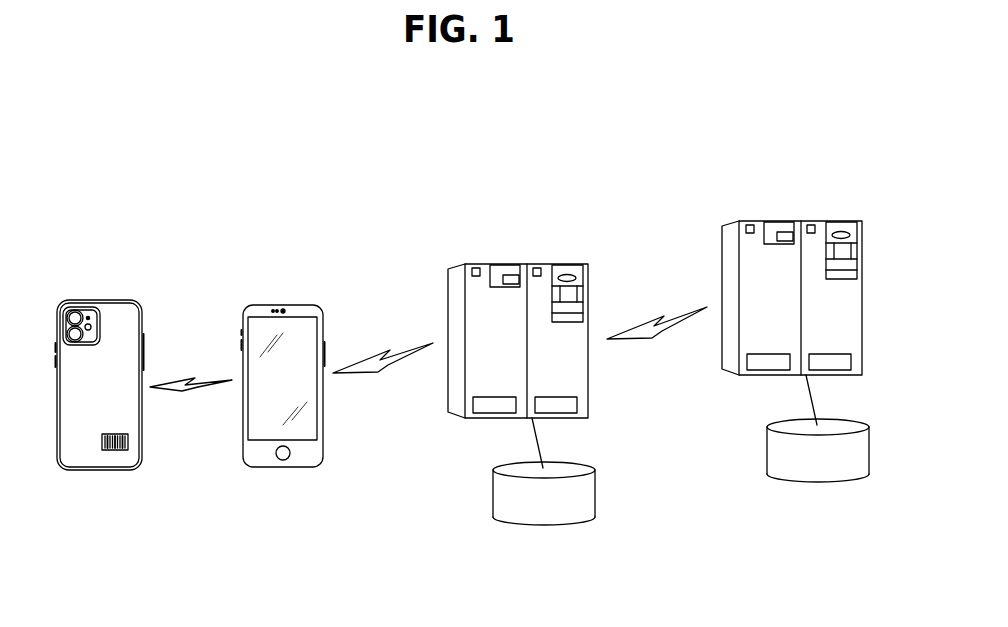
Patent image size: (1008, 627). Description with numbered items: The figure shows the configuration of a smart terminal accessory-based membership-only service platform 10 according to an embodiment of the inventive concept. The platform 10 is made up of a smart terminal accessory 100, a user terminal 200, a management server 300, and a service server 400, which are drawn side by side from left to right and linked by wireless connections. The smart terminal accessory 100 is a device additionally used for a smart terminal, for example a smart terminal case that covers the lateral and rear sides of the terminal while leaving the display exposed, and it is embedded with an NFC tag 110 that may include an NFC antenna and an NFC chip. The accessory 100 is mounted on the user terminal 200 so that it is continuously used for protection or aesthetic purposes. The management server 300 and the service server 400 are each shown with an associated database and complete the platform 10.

The smart terminal accessory-based membership-only service platform 10 is at (659, 114).
The smart terminal accessory 100 is at (98, 300).
The NFC tag 110 is at (115, 450).
The user terminal 200 is at (283, 303).
The management server 300 is at (497, 263).
The service server 400 is at (771, 220).